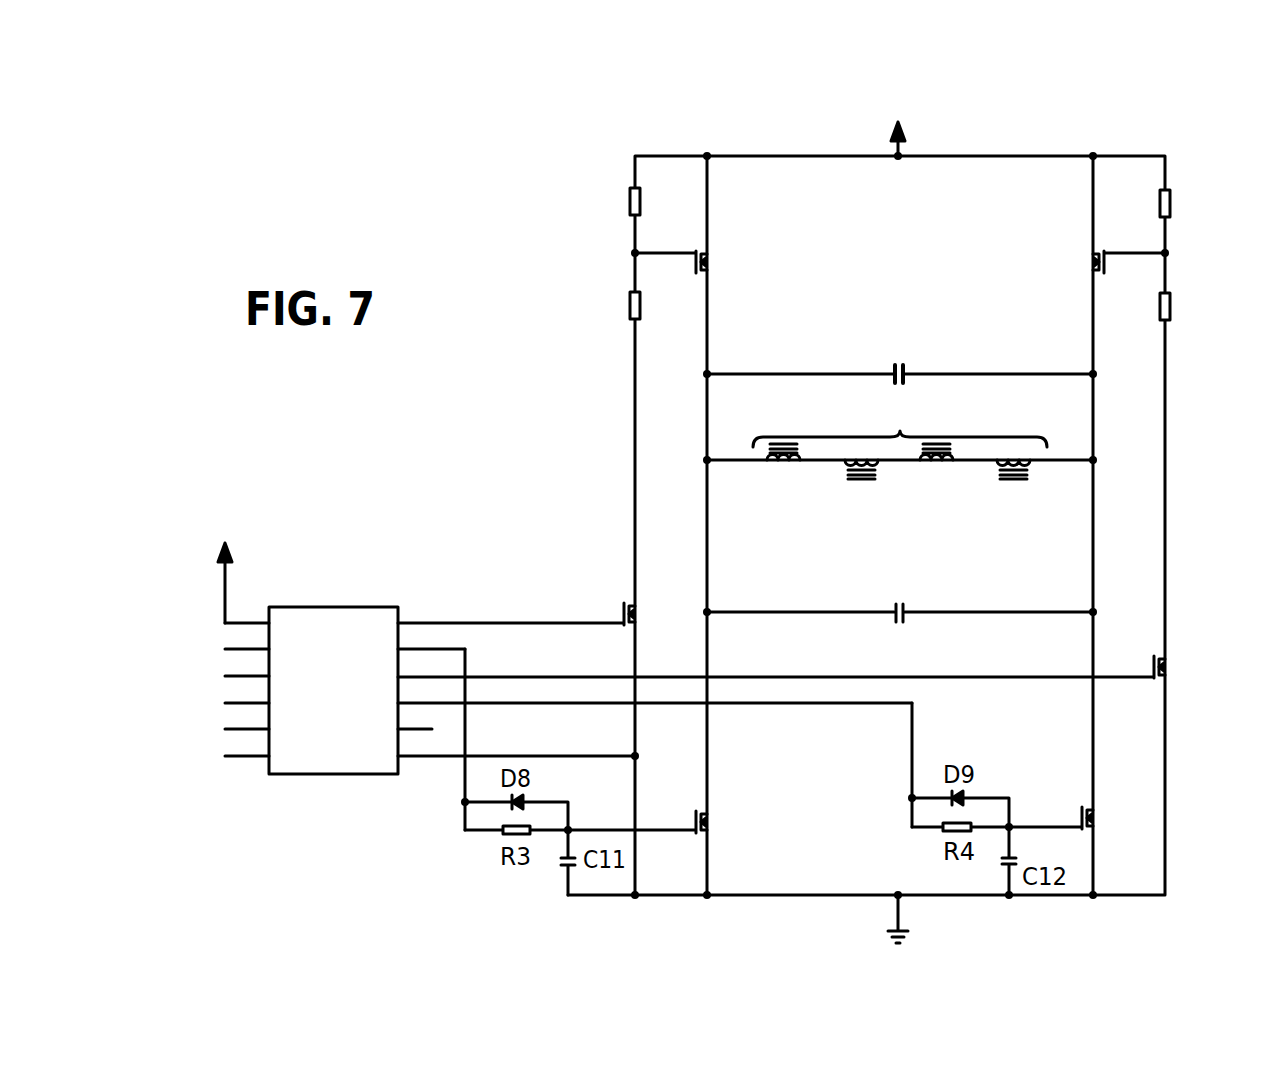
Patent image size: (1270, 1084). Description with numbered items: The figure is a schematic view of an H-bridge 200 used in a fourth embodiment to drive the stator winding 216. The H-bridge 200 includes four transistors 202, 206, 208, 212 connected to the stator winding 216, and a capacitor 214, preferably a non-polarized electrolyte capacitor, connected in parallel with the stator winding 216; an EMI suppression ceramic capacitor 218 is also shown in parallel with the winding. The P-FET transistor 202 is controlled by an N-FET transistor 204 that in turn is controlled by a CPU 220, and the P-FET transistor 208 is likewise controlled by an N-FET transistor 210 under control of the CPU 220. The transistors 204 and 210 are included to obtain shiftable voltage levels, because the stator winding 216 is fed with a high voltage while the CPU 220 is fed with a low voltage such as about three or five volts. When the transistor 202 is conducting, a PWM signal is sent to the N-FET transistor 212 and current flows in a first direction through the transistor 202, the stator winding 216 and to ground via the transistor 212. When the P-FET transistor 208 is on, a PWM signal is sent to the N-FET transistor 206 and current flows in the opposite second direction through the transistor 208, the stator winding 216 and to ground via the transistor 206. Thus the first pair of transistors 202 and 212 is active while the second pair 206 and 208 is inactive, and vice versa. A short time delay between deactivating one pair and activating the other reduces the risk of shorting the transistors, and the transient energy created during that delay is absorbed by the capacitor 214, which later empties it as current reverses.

The H-bridge 200 is at (726, 151).
The P-FET transistor 202 is at (713, 260).
The N-FET transistor 204 is at (613, 605).
The N-FET transistor 206 is at (712, 818).
The P-FET transistor 208 is at (1087, 262).
The N-FET transistor 210 is at (1170, 662).
The N-FET transistor 212 is at (1078, 808).
The capacitor 214 is at (905, 327).
The stator winding 216 is at (900, 432).
The EMI suppression ceramic capacitor C10 218 is at (903, 622).
The CPU 220 is at (228, 742).